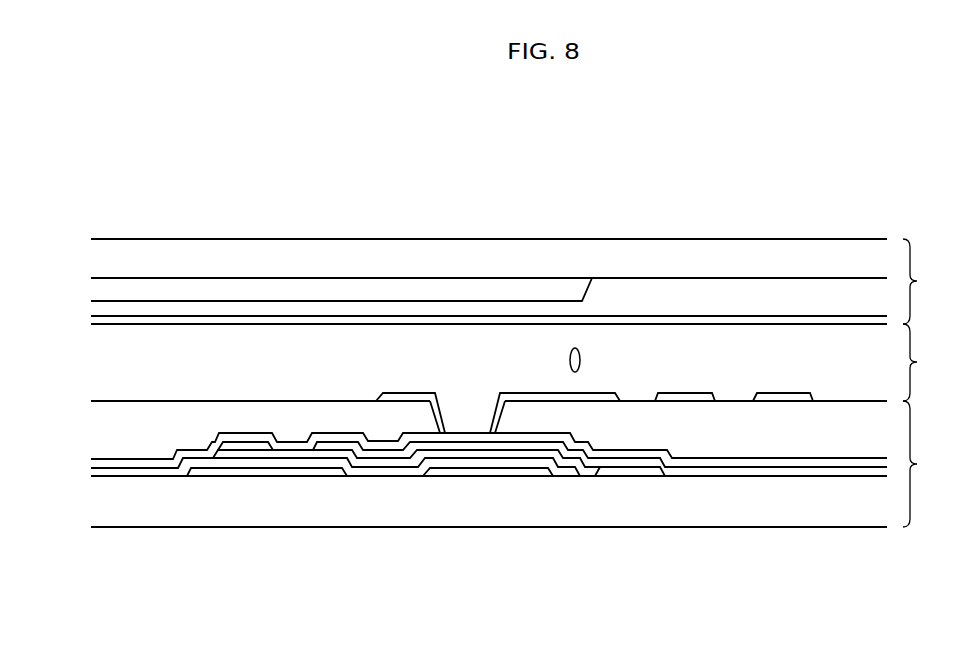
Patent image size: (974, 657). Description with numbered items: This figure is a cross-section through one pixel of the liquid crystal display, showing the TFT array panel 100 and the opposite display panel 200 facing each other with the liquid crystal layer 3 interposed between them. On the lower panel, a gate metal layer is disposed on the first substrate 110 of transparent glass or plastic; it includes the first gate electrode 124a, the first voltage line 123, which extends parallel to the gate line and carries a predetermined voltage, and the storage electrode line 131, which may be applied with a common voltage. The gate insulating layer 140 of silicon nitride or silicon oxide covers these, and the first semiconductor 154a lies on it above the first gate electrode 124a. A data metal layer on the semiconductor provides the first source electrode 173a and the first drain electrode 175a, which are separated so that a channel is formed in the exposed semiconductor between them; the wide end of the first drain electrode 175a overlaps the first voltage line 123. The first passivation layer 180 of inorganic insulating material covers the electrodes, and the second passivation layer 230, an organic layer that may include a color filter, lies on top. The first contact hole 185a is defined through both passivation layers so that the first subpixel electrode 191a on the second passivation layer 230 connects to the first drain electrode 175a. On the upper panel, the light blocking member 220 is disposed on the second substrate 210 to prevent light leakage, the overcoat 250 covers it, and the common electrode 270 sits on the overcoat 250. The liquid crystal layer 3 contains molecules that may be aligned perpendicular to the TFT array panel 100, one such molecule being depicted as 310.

The TFT array panel 100 is at (932, 464).
The first substrate 110 is at (835, 517).
The first voltage line 123 is at (465, 470).
The first gate electrode 124a is at (265, 473).
The storage electrode line 131 is at (628, 474).
The gate insulating layer 140 is at (143, 473).
The first semiconductor 154a is at (318, 457).
The first source electrode 173a is at (232, 447).
The first drain electrode 175a is at (338, 445).
The first passivation layer 180 is at (102, 462).
The first contact hole 185a is at (445, 433).
The first subpixel electrode 191a is at (538, 394).
The second passivation layer 230 is at (770, 450).
The opposite display panel 200 is at (932, 281).
The second substrate 210 is at (737, 250).
The light blocking member 220 is at (482, 287).
The overcoat 250 is at (633, 288).
The common electrode 270 is at (788, 318).
The liquid crystal layer 3 is at (922, 362).
The liquid crystal molecule 310 is at (581, 358).